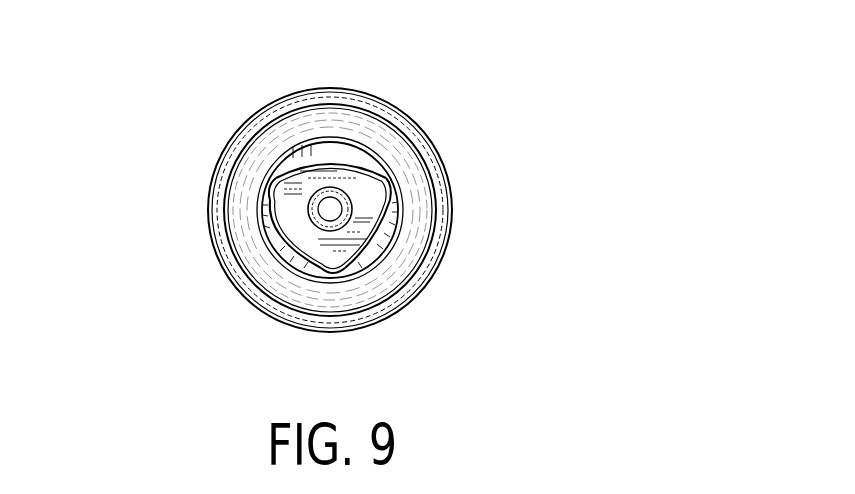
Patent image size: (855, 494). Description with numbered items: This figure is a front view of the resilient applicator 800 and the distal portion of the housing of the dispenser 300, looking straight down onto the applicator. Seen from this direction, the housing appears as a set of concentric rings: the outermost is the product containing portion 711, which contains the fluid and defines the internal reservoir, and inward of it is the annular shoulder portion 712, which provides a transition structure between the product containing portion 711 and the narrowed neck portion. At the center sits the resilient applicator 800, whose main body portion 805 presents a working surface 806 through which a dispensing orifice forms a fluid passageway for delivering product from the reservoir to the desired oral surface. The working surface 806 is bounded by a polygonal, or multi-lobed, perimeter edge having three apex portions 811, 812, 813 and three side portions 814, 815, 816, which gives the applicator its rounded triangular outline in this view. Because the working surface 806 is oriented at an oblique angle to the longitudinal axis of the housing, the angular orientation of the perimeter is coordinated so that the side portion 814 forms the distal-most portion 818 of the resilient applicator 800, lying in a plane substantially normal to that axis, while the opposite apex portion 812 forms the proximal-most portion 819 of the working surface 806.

The dispenser 300 is at (483, 62).
The product containing portion 711 is at (445, 258).
The annular shoulder portion 712 is at (417, 192).
The resilient applicator 800 is at (353, 147).
The main body portion 805 is at (400, 225).
The working surface 806 is at (310, 257).
The apex portion 811 is at (387, 180).
The apex portion 812 is at (333, 276).
The apex portion 813 is at (276, 180).
The side portion 814 is at (330, 165).
The side portion 815 is at (372, 240).
The side portion 816 is at (283, 231).
The distal-most portion 818 is at (302, 151).
The proximal-most portion 819 is at (333, 265).